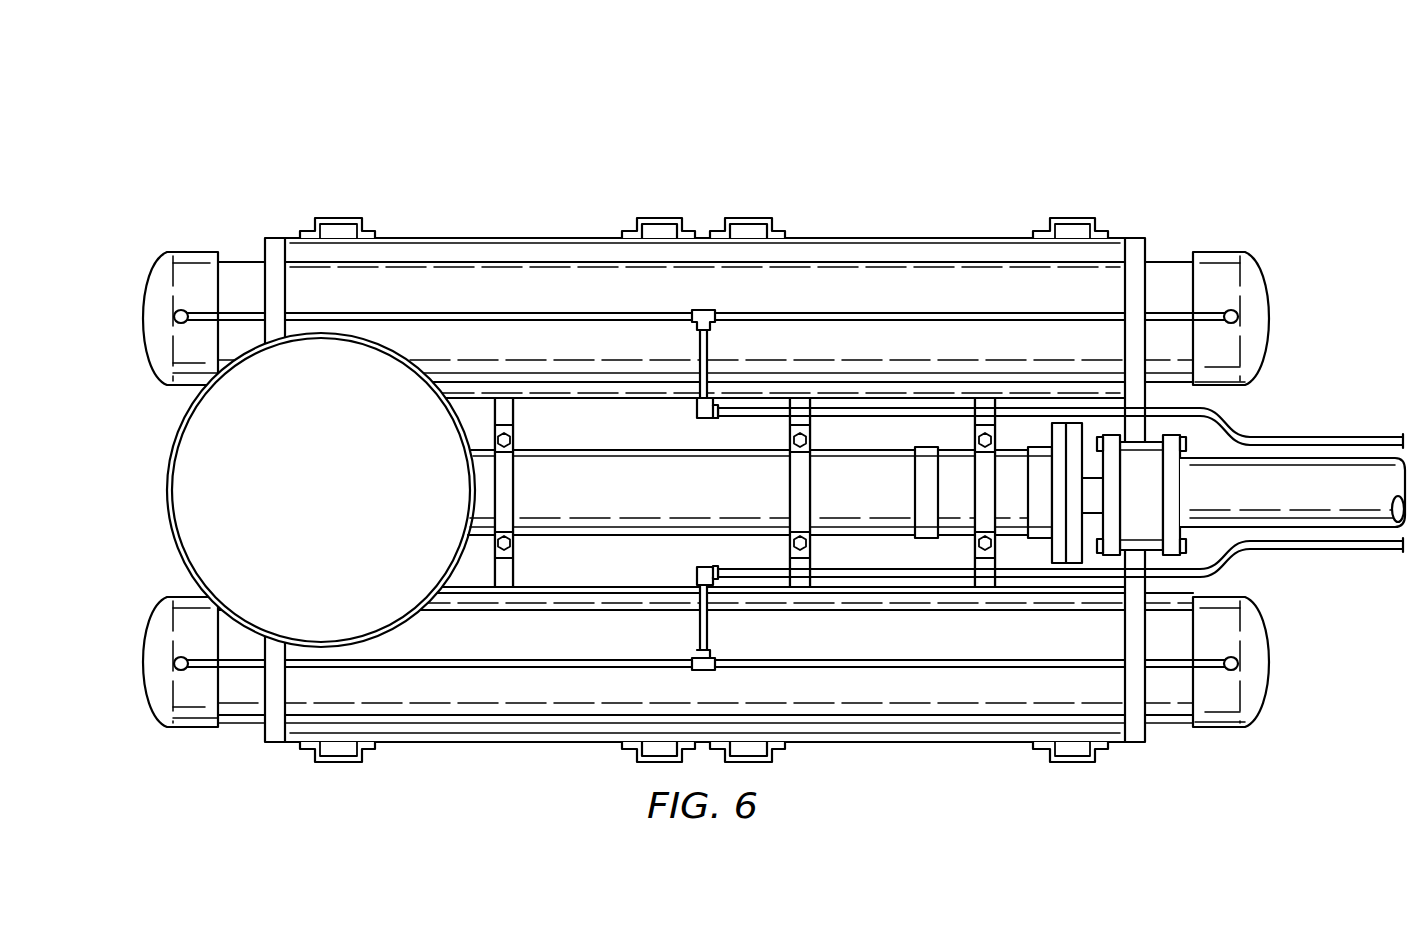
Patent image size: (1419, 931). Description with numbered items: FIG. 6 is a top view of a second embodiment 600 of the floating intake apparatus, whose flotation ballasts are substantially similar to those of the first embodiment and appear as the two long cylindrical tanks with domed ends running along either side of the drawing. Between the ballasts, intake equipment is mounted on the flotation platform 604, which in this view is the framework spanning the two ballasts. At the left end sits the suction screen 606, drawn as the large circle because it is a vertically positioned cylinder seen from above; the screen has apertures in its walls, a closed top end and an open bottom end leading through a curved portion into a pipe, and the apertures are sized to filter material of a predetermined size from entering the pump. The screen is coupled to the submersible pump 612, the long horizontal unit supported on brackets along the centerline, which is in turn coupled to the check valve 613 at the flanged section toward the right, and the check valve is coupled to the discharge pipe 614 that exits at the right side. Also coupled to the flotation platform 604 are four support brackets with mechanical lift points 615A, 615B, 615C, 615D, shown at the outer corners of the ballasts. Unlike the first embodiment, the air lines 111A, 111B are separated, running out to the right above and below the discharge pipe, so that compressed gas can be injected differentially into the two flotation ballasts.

The second embodiment 600 is at (472, 110).
The flotation platform 604 is at (277, 237).
The suction screen 606 is at (167, 493).
The submersible pump 612 is at (642, 447).
The check valve 613 is at (1182, 492).
The discharge pipe 614 is at (1287, 531).
The support bracket with mechanical lift point 615A is at (1070, 218).
The support bracket with mechanical lift point 615B is at (326, 217).
The support bracket with mechanical lift point 615C is at (1072, 766).
The support bracket with mechanical lift point 615D is at (336, 766).
The air line 111A is at (1365, 437).
The air line 111B is at (1365, 550).